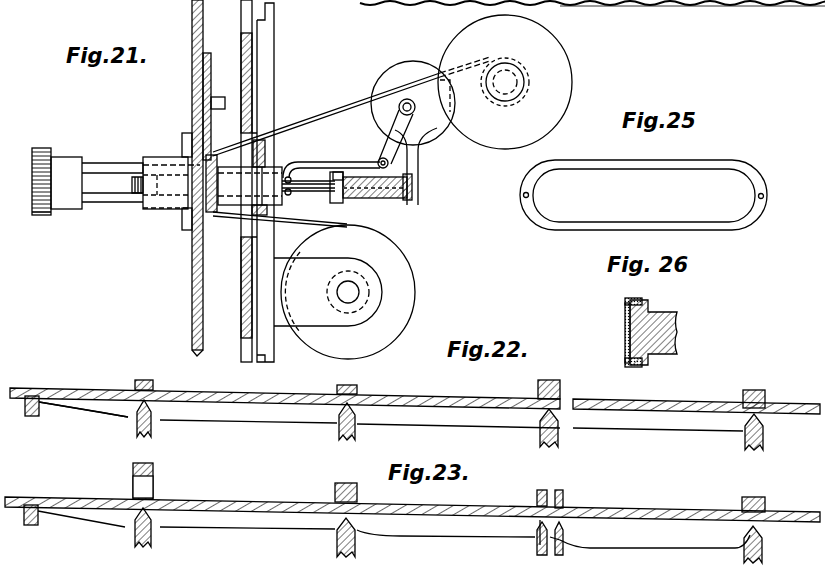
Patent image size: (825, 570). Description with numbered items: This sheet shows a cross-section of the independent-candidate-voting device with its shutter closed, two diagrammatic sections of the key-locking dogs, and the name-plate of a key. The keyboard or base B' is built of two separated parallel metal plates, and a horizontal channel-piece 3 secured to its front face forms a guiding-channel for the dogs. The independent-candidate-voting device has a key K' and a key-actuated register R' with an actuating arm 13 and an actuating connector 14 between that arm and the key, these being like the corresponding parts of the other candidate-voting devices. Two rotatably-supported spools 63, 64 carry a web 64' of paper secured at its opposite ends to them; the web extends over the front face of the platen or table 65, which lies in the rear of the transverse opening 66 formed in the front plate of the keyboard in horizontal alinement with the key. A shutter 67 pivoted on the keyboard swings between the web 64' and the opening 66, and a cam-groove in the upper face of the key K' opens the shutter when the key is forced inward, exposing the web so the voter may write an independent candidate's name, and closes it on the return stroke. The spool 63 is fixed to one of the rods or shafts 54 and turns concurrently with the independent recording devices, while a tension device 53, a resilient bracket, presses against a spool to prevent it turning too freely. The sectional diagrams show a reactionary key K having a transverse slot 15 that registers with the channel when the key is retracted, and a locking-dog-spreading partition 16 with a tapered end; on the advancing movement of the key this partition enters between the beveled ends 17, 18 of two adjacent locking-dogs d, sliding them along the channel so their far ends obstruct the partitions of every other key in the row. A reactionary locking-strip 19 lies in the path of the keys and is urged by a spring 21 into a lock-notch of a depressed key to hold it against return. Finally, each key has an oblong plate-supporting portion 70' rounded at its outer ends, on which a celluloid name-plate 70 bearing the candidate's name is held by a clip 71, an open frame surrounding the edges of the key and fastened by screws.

In FIG. 21, the channel-piece 3 is at (151, 218).
In FIG. 21, the actuating arm 13 is at (431, 141).
In FIG. 21, the actuating connector 14 is at (320, 162).
In FIG. 21, the transverse slot 15 is at (143, 166).
In FIG. 23, the transverse slot 15 is at (154, 484).
In FIG. 21, the locking-dog-spreading partition 16 is at (132, 182).
In FIG. 22, the locking-dog-spreading partition 16 is at (153, 420).
In FIG. 23, the locking-dog-spreading partition 16 is at (137, 498).
In FIG. 22, the beveled end of locking-dog 17 is at (170, 415).
In FIG. 21, the beveled end of locking-dog 18 is at (301, 188).
In FIG. 22, the beveled end of locking-dog 18 is at (128, 413).
In FIG. 21, the locking-strip 19 is at (266, 153).
In FIG. 21, the spring 21 is at (672, 8).
In FIG. 21, the tension device 53 is at (328, 292).
In FIG. 21, the rod or shaft 54 is at (507, 82).
In FIG. 21, the spool 63 is at (567, 102).
In FIG. 21, the spool 64 is at (328, 285).
In FIG. 21, the web 64' is at (351, 106).
In FIG. 21, the platen or table 65 is at (254, 191).
In FIG. 21, the transverse opening 66 is at (186, 196).
In FIG. 21, the shutter 67 is at (212, 132).
In FIG. 25, the name-plate 70 is at (643, 203).
In FIG. 26, the name-plate 70 is at (619, 330).
In FIG. 21, the plate-supporting portion 70' is at (45, 226).
In FIG. 26, the plate-supporting portion 70' is at (639, 372).
In FIG. 25, the clip 71 is at (738, 167).
In FIG. 26, the clip 71 is at (644, 301).
In FIG. 21, the keyboard or base B' is at (196, 178).
In FIG. 21, the key K' is at (87, 175).
In FIG. 21, the key-actuated register R' is at (413, 99).
In FIG. 22, the counteractuating key K is at (578, 442).
In FIG. 22, the locking-dog d is at (401, 406).
In FIG. 23, the locking-dog d is at (598, 524).